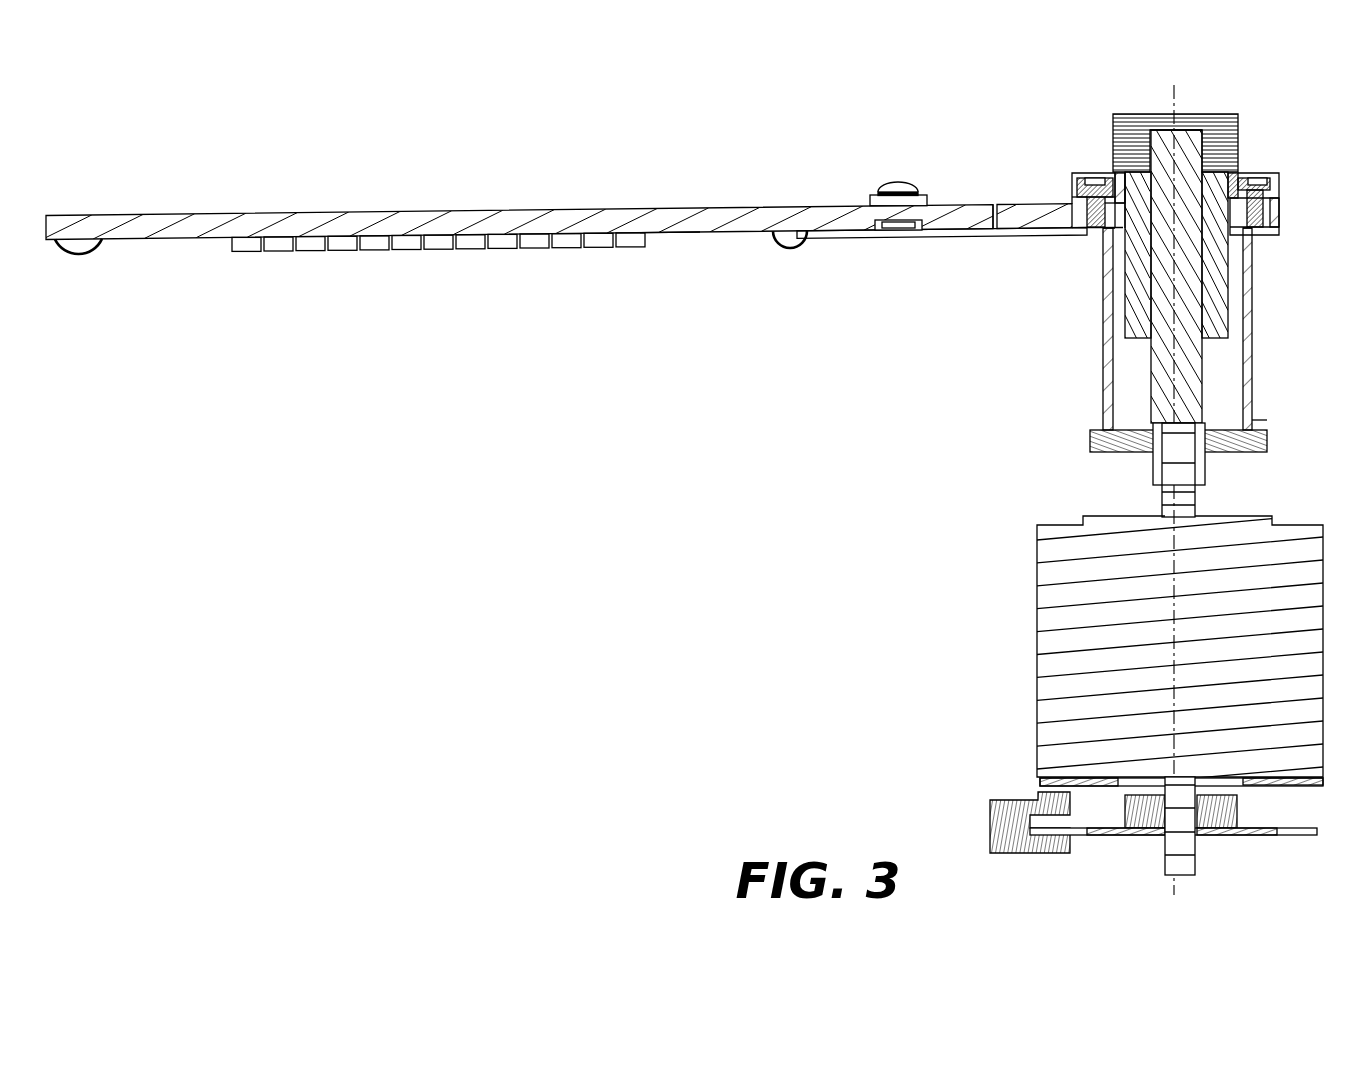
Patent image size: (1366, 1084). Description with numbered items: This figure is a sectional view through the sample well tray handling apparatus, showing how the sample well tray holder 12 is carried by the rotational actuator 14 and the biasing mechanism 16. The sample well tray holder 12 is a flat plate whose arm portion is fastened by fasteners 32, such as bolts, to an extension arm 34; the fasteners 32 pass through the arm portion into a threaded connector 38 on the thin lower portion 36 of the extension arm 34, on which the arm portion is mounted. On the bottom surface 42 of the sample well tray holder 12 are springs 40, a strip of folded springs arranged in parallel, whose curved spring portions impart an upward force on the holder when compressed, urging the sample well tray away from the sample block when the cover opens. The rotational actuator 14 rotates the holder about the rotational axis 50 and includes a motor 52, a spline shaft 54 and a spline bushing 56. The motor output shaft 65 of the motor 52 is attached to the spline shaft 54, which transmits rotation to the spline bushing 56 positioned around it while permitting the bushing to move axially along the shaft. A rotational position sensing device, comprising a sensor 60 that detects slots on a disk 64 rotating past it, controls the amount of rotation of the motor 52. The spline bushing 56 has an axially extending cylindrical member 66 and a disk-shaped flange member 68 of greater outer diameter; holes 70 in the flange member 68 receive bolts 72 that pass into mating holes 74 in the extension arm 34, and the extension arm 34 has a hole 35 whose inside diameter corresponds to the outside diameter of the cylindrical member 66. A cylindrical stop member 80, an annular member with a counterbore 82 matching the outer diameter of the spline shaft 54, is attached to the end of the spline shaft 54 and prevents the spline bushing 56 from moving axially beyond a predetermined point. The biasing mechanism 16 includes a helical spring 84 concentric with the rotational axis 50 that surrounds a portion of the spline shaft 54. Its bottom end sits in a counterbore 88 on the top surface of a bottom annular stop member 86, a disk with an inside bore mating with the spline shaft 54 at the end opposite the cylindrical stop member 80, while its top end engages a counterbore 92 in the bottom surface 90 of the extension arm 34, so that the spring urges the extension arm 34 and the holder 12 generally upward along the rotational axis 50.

The sample well tray holder 12 is at (421, 206).
The rotational actuator 14 is at (1323, 520).
The biasing mechanism 16 is at (1306, 282).
The fasteners 32 is at (898, 185).
The extension arm 34 is at (1012, 203).
The hole 35 is at (1127, 215).
The thin lower portion 36 is at (853, 240).
The threaded connector 38 is at (893, 232).
The springs 40 is at (278, 252).
The bottom surface 42 is at (672, 232).
The rotational axis 50 is at (1195, 875).
The motor 52 is at (1050, 638).
The spline shaft 54 is at (1192, 365).
The spline bushing 56 is at (1228, 256).
The sensor 60 is at (1010, 800).
The disk 64 is at (1125, 836).
The motor output shaft 65 is at (1165, 483).
The axially extending cylindrical member 66 is at (1213, 292).
The flange member 68 is at (1232, 172).
The holes 70 is at (1282, 190).
The bolts 72 is at (1080, 178).
The mating holes 74 is at (1078, 225).
The cylindrical stop member 80 is at (1238, 126).
The annular recess or counterbore 82 is at (1192, 138).
The helical spring 84 is at (1250, 330).
The bottom annular stop member 86 is at (1227, 452).
The counterbore 88 is at (1258, 428).
The bottom surface 90 is at (1010, 238).
The counterbore 92 is at (1103, 253).